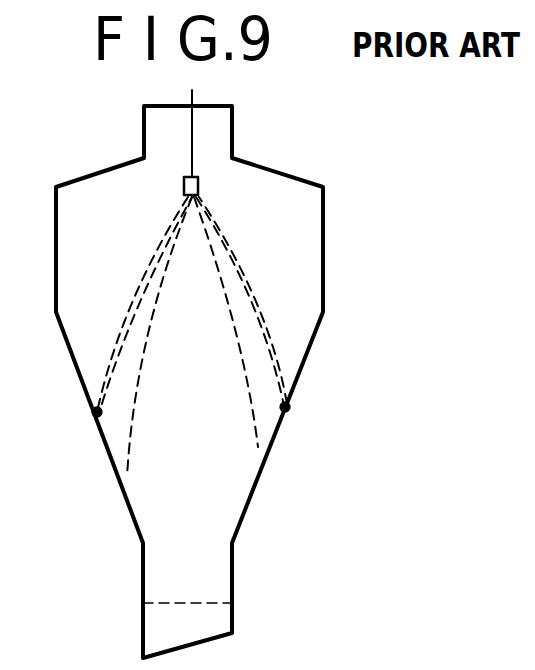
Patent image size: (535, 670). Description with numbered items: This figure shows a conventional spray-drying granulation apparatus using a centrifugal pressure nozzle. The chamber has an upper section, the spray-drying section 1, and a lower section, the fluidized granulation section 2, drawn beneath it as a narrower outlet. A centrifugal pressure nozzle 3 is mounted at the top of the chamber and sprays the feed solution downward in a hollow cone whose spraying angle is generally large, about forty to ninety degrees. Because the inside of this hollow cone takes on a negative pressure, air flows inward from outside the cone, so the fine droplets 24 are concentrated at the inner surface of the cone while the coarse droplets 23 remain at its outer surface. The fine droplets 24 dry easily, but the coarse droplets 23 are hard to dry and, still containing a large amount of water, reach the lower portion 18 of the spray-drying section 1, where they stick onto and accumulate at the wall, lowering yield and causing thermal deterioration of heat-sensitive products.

The spray-drying section 1 is at (323, 212).
The fluidized granulation section 2 is at (213, 573).
The centrifugal pressure nozzle 3 is at (198, 185).
The lower portion of the spray-drying section 18 is at (287, 407).
The coarse droplets 23 is at (248, 303).
The fine droplets 24 is at (258, 445).